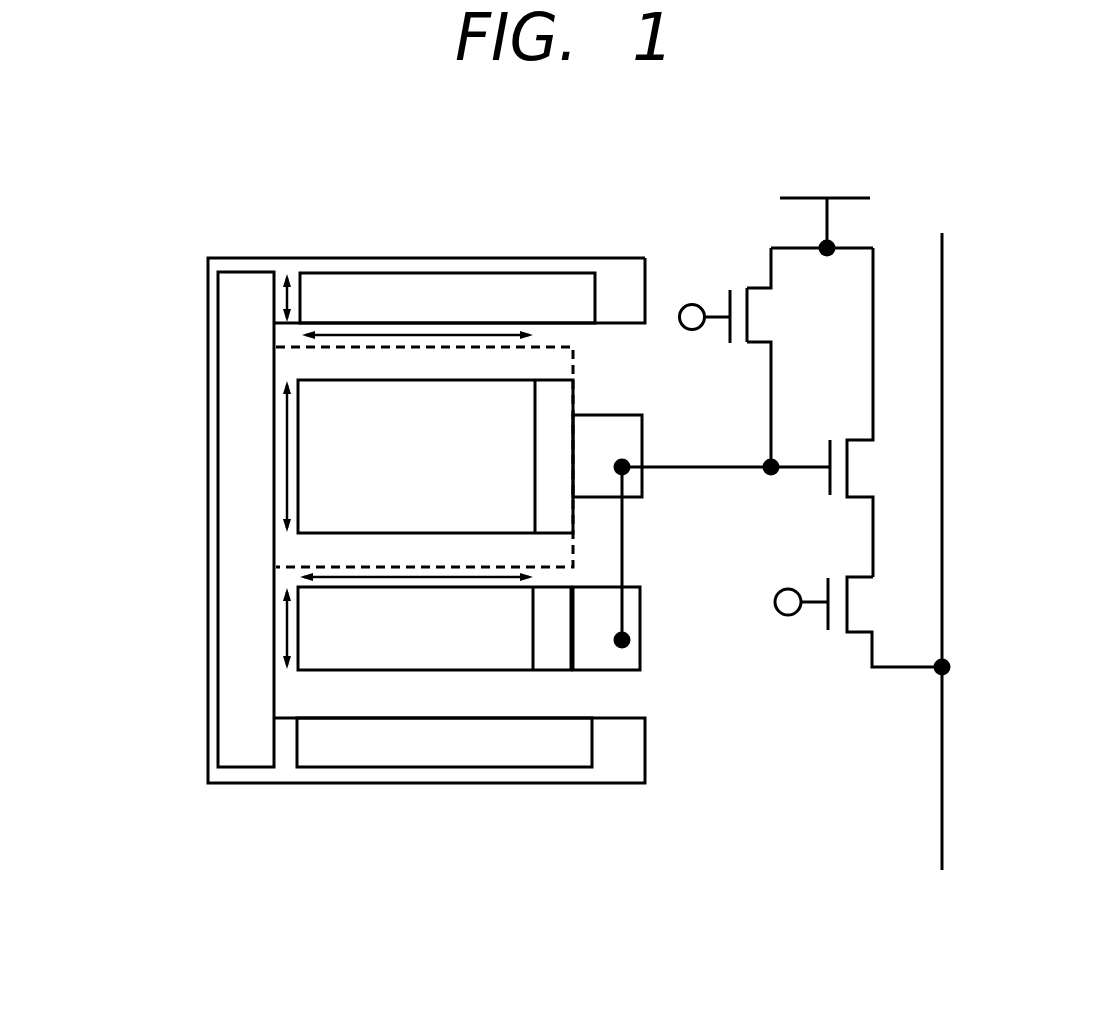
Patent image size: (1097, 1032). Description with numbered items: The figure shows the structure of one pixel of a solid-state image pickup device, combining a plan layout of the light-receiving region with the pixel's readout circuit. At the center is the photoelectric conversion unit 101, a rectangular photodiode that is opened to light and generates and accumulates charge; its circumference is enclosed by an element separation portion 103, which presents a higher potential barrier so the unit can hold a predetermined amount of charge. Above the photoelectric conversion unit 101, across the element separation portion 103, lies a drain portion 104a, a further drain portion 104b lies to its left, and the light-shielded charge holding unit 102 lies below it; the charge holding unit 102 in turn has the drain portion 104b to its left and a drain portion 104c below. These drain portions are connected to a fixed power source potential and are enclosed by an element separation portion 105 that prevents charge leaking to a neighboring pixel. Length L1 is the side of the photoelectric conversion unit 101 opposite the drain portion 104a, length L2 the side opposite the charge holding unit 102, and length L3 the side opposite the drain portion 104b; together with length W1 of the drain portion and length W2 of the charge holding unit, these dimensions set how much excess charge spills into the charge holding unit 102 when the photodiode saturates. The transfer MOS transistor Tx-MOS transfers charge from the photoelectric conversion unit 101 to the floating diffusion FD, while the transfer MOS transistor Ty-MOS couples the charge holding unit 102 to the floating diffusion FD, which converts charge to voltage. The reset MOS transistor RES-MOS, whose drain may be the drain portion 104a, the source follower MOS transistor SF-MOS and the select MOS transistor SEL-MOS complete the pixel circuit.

The photoelectric conversion unit 101 is at (340, 388).
The charge holding unit 102 is at (420, 665).
The element separation portion 103 is at (577, 365).
The drain portion 104a is at (350, 282).
The drain portion 104b is at (235, 517).
The drain portion 104c is at (457, 760).
The element separation portion 105 is at (253, 258).
The length L1 is at (428, 335).
The length L2 is at (387, 576).
The length L3 is at (287, 452).
The length of drain portion W1 is at (287, 296).
The length of charge holding unit W2 is at (287, 628).
The floating diffusion FD is at (638, 452).
The transfer MOS transistor Tx-MOS is at (553, 398).
The transfer MOS transistor Ty-MOS is at (550, 663).
The reset MOS transistor RES-MOS is at (757, 287).
The source follower MOS transistor SF-MOS is at (853, 498).
The select MOS transistor SEL-MOS is at (858, 632).